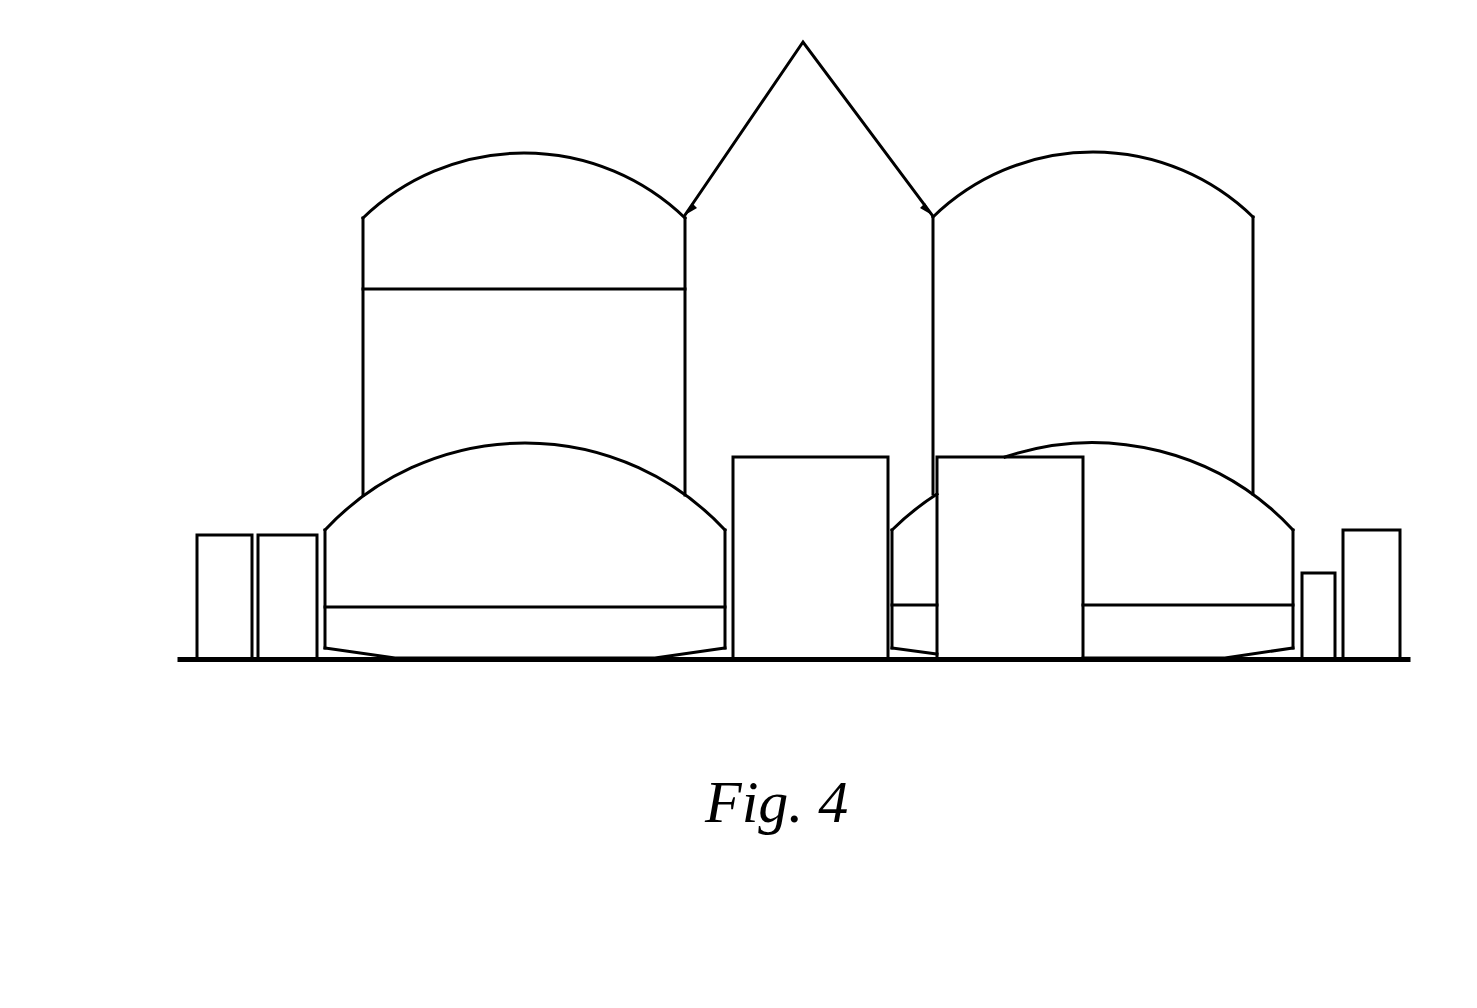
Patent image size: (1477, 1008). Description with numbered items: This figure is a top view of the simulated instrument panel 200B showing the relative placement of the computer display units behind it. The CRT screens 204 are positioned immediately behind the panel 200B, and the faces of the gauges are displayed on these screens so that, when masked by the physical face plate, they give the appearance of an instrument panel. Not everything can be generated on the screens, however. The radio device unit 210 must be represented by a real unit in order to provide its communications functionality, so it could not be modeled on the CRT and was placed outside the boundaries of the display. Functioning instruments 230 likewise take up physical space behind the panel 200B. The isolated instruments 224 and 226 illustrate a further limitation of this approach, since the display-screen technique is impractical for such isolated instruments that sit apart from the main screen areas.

The CRT screens 204 is at (803, 42).
The radio device unit 210 is at (935, 471).
The functioning instruments 230 is at (799, 515).
The isolated instrument 224 is at (292, 530).
The isolated instrument 226 is at (1400, 540).
The panel 200B is at (794, 721).